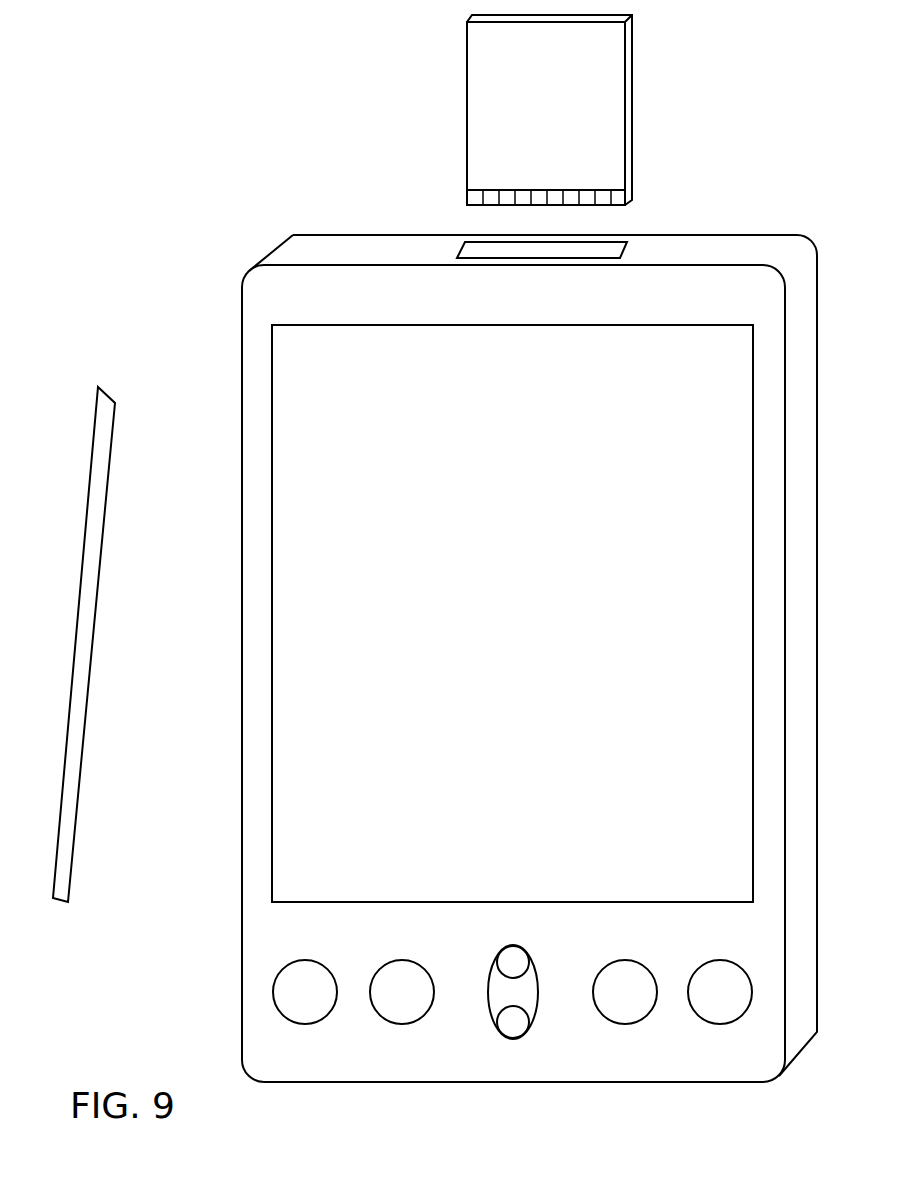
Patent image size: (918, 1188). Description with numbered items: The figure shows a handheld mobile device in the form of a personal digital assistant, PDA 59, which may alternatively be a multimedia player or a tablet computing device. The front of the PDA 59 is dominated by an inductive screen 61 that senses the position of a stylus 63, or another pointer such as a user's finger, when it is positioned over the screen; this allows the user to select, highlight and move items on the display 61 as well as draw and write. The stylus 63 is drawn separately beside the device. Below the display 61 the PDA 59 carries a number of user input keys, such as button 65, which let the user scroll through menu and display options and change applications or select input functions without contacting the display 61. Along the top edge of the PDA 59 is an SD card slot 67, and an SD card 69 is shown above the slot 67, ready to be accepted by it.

The personal digital assistant 59 is at (212, 450).
The inductive screen 61 is at (512, 613).
The stylus 63 is at (68, 902).
The button 65 is at (288, 983).
The SD card slot 67 is at (556, 245).
The SD card 69 is at (467, 112).